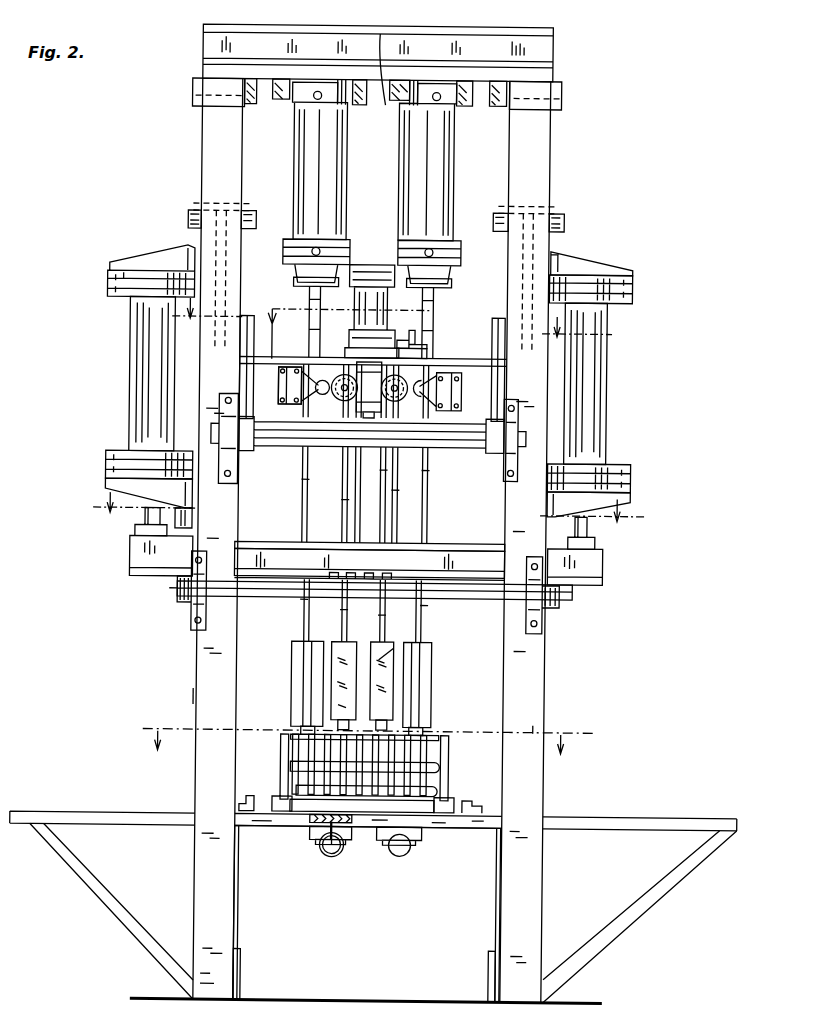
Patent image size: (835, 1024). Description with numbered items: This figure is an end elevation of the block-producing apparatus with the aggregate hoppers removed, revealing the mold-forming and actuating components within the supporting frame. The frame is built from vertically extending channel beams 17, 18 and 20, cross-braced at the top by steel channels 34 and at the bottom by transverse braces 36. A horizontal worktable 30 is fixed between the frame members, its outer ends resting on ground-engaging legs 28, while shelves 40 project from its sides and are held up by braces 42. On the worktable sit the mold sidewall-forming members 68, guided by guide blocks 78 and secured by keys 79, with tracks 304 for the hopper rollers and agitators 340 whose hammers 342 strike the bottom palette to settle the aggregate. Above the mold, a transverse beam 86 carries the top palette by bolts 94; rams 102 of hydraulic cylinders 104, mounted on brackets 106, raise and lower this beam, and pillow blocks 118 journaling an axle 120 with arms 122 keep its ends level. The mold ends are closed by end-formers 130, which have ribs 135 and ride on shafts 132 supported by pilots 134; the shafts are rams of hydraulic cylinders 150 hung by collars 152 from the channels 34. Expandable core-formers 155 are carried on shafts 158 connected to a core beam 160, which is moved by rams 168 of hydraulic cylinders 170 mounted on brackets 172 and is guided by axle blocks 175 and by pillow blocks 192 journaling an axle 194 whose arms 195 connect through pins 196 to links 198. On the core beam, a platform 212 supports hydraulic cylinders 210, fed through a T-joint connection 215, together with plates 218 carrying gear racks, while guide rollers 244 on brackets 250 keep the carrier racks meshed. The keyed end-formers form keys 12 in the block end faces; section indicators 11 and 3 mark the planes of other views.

The collars 152 is at (384, 100).
The steel channels 34 is at (555, 76).
The shafts 132 is at (352, 100).
The hydraulic cylinders 150 is at (450, 180).
The hydraulic cylinder 170 is at (200, 205).
The brackets 172 is at (190, 220).
The ram 168 is at (540, 258).
The core beam 160 is at (275, 360).
The hydraulic cylinders 210 is at (357, 324).
The T-joint connection 215 is at (402, 340).
The pins 196 is at (470, 340).
The platform 212 is at (392, 358).
The links 198 is at (470, 358).
The bracket 250 is at (282, 375).
The arms 195 is at (300, 384).
The plates 218 is at (369, 390).
The guide rollers 244 is at (446, 395).
The pillow blocks 192 is at (232, 436).
The axle 194 is at (287, 445).
The hydraulic cylinders 104 is at (612, 365).
The brackets 106 is at (580, 490).
The rams 102 is at (112, 485).
The shafts 158 is at (345, 545).
The beam 86 is at (470, 562).
The bolts 94 is at (405, 576).
The arms 122 is at (608, 566).
The axle blocks 175 is at (190, 593).
The pillow blocks 118 is at (200, 608).
The axle 120 is at (218, 600).
The channel beams 18 is at (200, 698).
The core-formers 155 is at (400, 648).
The ribs 135 is at (310, 650).
The end-formers 130 is at (304, 675).
The pilots 134 is at (305, 728).
The channel beams 20 is at (540, 728).
The shelves 40 is at (70, 816).
The tracks 304 is at (252, 805).
The mold sidewall-forming members 68 is at (461, 775).
The guide blocks 78 is at (470, 805).
The keys 79 is at (330, 812).
The hammers 342 is at (340, 855).
The agitators 340 is at (352, 850).
The worktable 30 is at (462, 828).
The channel beams 17 is at (218, 866).
The ground-engaging legs 28 is at (247, 926).
The braces 36 is at (250, 972).
The braces 42 is at (110, 915).
The keys 12 is at (392, 328).
The section line 11- 11 is at (369, 524).
The section line 3- 3 is at (367, 752).